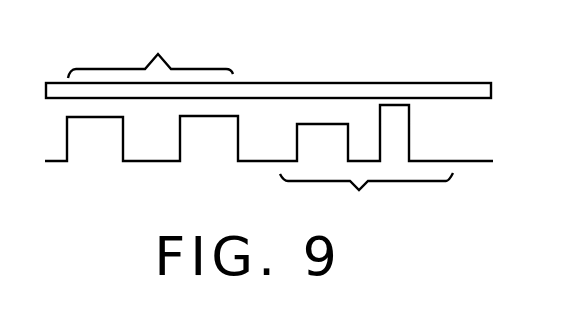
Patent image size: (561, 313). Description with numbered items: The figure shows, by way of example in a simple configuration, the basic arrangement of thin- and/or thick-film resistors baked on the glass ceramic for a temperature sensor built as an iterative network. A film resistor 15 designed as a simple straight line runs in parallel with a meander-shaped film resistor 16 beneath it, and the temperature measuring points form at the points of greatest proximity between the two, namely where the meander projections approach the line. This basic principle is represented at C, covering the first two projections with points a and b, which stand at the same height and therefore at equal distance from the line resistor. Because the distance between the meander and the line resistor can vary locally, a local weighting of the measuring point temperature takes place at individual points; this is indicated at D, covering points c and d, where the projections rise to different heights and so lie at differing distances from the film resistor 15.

The film resistor 15 is at (365, 83).
The meander-shaped film resistor 16 is at (149, 162).
The principle region with points a and b C is at (150, 52).
The local weighting region with points c and d D is at (366, 197).